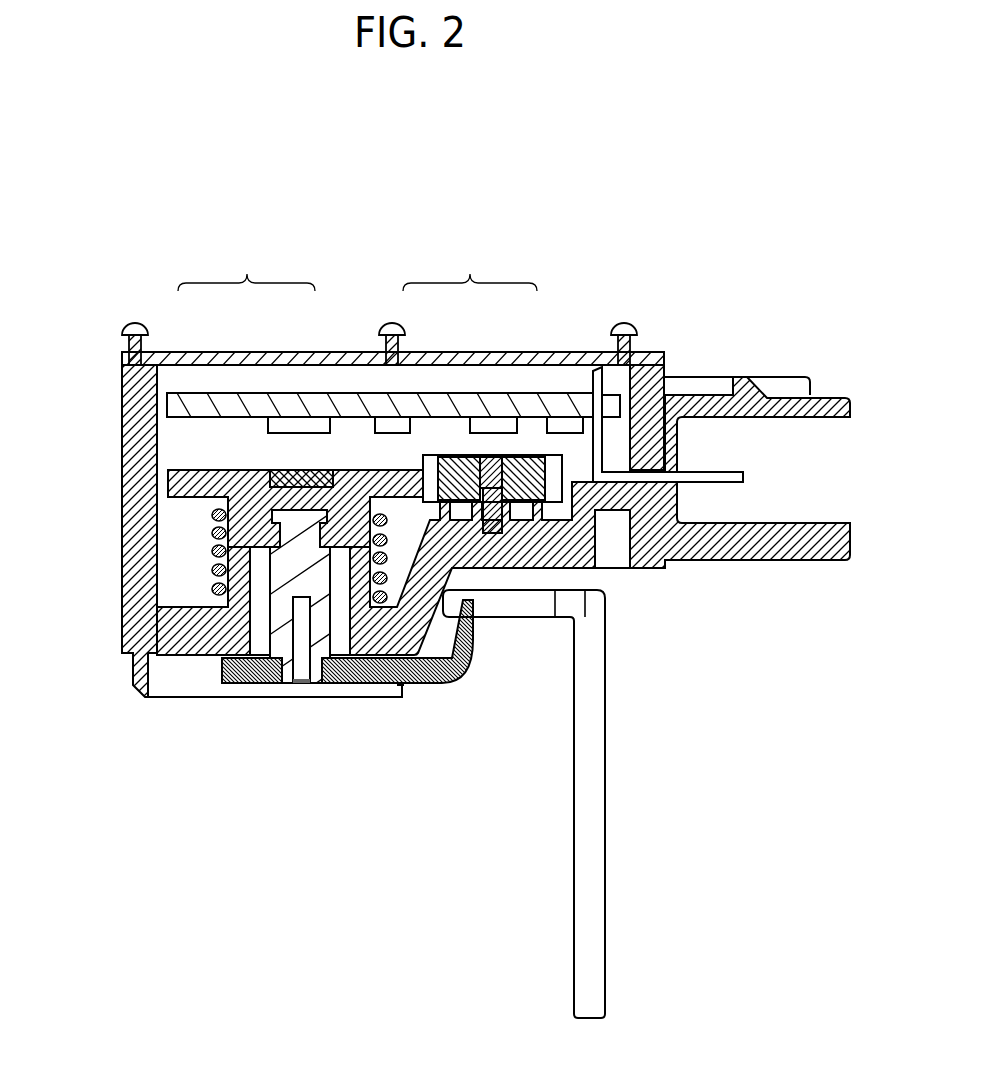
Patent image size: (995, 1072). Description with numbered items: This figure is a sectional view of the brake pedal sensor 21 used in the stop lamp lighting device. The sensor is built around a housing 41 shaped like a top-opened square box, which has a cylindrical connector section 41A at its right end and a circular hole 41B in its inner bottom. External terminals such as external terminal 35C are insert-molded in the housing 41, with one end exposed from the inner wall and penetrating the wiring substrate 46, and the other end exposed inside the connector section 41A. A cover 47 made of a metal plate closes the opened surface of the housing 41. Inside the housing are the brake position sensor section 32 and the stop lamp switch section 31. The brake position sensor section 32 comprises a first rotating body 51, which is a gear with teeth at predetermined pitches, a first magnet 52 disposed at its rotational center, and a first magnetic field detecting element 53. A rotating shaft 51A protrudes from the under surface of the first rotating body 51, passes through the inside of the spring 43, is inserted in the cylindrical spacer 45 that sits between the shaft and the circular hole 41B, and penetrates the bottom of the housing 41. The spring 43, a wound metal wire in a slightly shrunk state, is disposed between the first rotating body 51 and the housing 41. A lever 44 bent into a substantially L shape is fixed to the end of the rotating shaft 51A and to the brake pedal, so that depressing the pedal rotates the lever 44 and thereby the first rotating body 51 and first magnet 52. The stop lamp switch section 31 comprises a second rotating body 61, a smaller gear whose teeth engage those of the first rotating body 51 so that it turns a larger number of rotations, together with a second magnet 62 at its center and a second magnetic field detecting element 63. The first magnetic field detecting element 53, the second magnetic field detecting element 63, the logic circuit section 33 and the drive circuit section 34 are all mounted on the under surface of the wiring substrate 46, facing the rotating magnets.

The brake pedal sensor 21 is at (785, 277).
The stop lamp switch section 31 is at (470, 264).
The brake position sensor section 32 is at (246, 264).
The logic circuit section 33 is at (383, 427).
The drive circuit section 34 is at (560, 427).
The external terminal 35C is at (690, 477).
The housing 41 is at (147, 487).
The connector section 41A is at (765, 542).
The circular hole 41B is at (250, 637).
The spring 43 is at (220, 550).
The lever 44 is at (592, 777).
The spacer 45 is at (342, 623).
The wiring substrate 46 is at (185, 403).
The cover 47 is at (650, 357).
The first rotating body 51 is at (257, 502).
The rotating shaft 51A is at (282, 648).
The first magnet 52 is at (295, 477).
The first magnetic field detecting element 53 is at (305, 427).
The second rotating body 61 is at (535, 470).
The second magnet 62 is at (485, 427).
The second magnetic field detecting element 63 is at (491, 477).